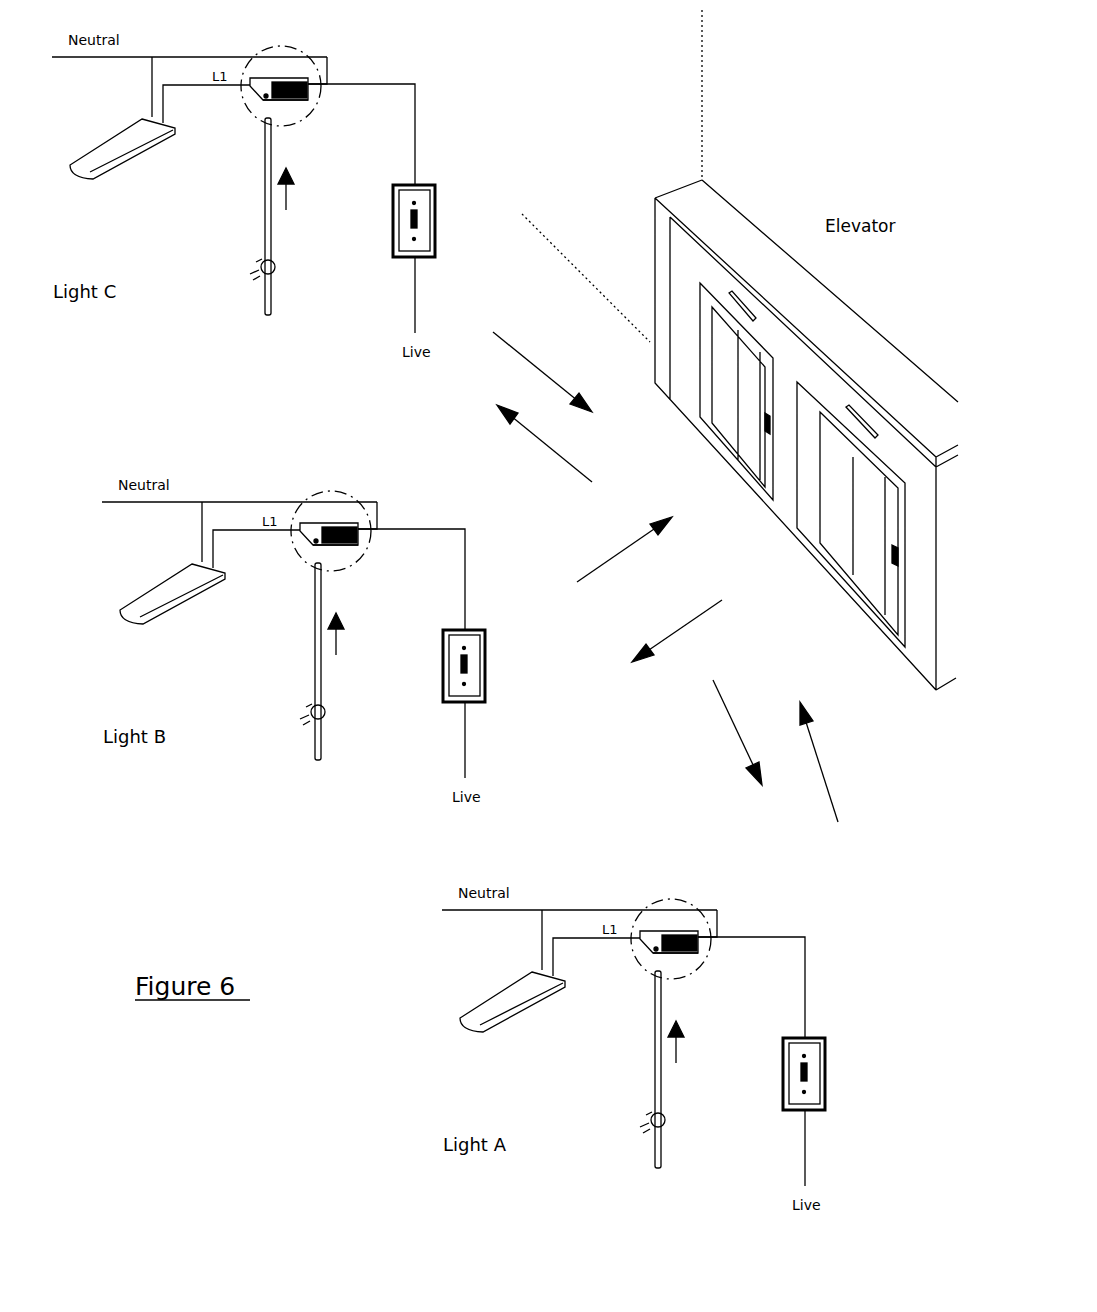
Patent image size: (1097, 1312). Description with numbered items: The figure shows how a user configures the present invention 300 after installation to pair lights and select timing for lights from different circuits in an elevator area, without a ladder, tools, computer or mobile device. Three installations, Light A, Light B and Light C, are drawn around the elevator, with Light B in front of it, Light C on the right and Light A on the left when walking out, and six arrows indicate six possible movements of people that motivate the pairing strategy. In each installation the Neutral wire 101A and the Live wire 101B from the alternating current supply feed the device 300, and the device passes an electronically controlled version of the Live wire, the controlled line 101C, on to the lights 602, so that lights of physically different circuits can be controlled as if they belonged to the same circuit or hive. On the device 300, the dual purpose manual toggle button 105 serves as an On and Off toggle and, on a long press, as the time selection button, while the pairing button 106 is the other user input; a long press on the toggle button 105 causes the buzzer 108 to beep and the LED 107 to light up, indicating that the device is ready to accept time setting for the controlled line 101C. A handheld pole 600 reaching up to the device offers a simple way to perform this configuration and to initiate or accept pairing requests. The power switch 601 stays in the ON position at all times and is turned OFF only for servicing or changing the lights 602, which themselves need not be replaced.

The Neutral wire 101A is at (330, 62).
The Live wire 101B is at (395, 82).
The L1 101C is at (227, 66).
The dual purpose manual toggle button 105 is at (264, 95).
The pairing button 106 is at (265, 97).
The LED 107 is at (268, 98).
The buzzer 108 is at (270, 96).
The present invention 300 is at (534, 515).
The handheld pole 600 is at (258, 218).
The power switch 601 is at (392, 218).
The lights 602 is at (75, 178).